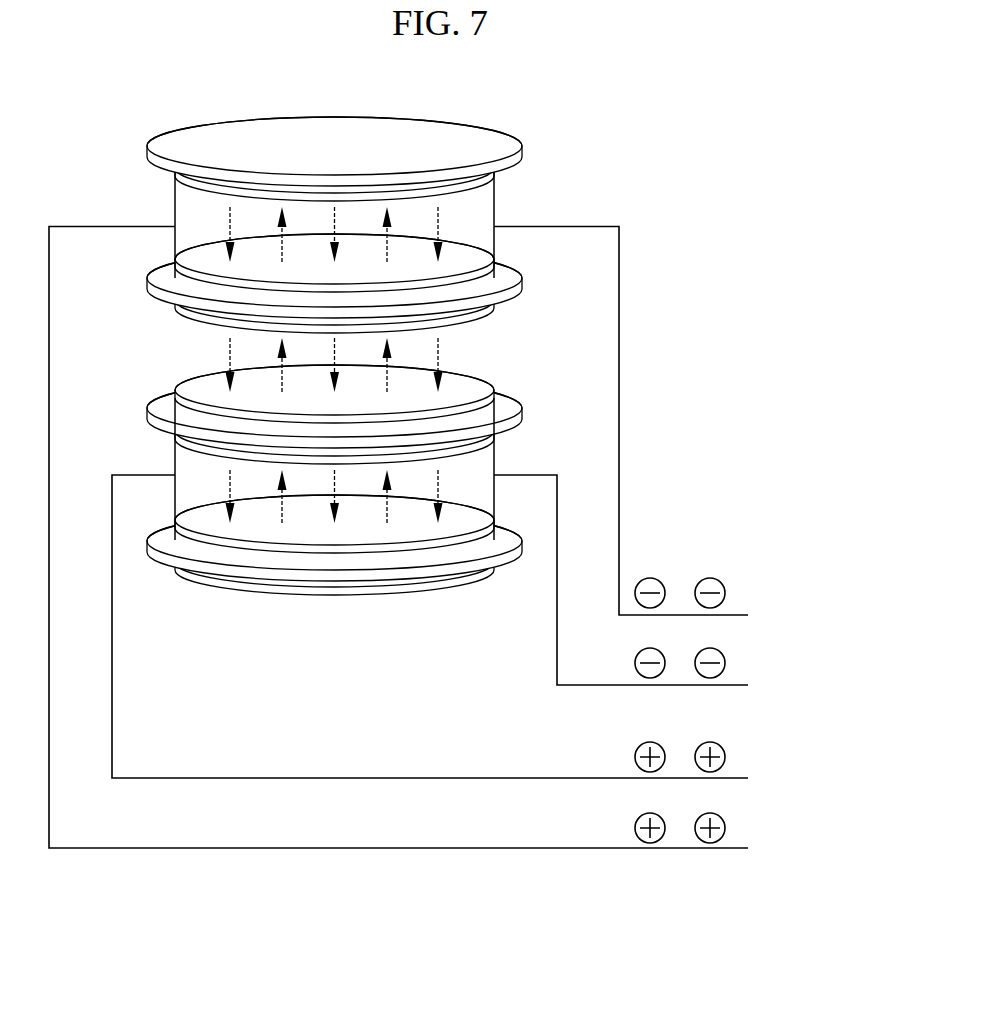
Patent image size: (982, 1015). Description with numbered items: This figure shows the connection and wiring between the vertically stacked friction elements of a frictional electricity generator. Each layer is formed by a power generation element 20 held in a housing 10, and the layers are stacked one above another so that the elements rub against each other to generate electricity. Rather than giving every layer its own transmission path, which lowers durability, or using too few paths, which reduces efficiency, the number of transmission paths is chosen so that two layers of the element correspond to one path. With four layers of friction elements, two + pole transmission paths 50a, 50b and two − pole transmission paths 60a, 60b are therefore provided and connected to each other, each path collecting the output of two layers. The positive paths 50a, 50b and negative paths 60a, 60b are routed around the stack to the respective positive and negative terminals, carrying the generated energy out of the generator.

The housing 10 is at (523, 152).
The power generation element 20 is at (476, 187).
The + pole transmission path 50a is at (742, 777).
The + pole transmission path 50b is at (742, 848).
The − pole transmission path 60a is at (742, 614).
The − pole transmission path 60b is at (742, 684).